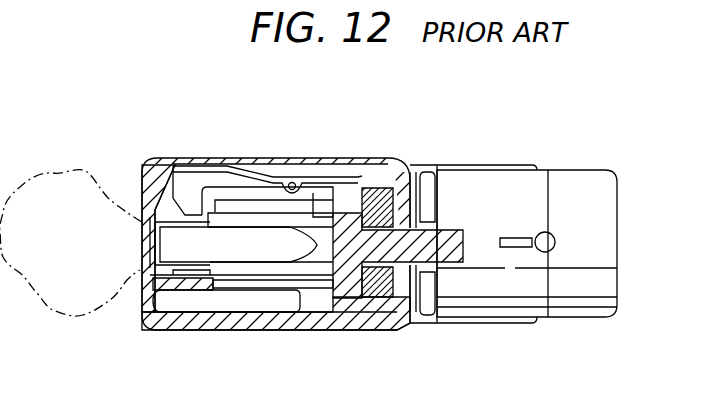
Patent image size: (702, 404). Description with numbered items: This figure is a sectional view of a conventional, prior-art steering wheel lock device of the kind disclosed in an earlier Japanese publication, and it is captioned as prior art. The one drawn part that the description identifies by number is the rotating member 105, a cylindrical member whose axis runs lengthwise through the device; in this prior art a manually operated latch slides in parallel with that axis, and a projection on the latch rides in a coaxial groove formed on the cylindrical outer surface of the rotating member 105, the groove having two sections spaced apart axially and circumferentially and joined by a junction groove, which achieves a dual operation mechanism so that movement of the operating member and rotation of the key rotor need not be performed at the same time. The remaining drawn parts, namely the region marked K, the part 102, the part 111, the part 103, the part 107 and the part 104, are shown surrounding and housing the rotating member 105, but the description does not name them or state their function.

The cable/plug outline (phantom) K is at (53, 175).
The housing 102 is at (316, 313).
The contact spring 111 is at (195, 183).
The holder 103 is at (266, 218).
The rotating member 105 is at (338, 200).
The sleeve 107 is at (387, 165).
The plug body 104 is at (480, 187).